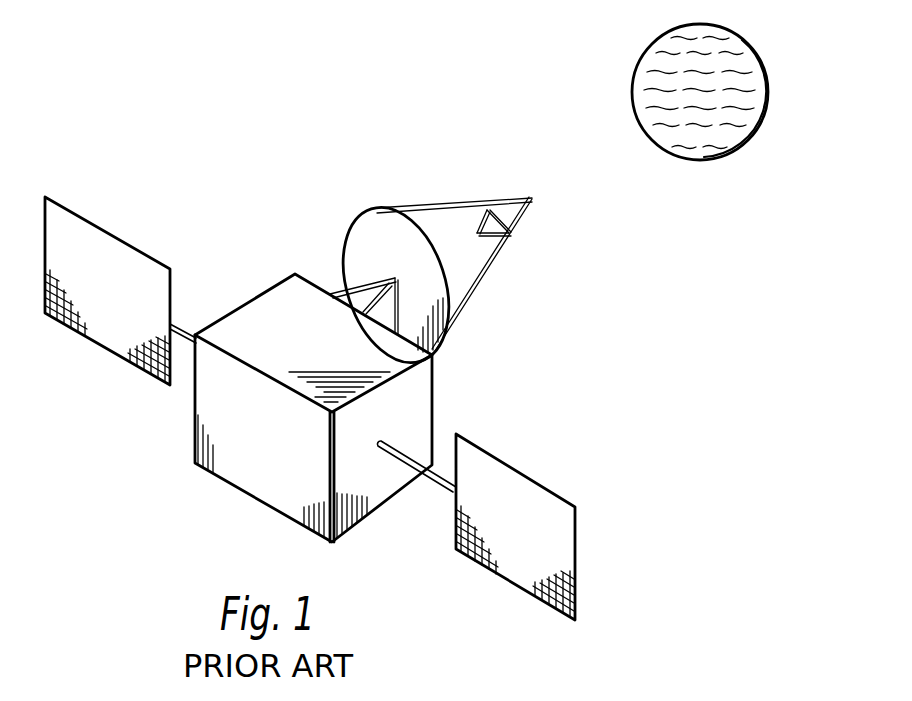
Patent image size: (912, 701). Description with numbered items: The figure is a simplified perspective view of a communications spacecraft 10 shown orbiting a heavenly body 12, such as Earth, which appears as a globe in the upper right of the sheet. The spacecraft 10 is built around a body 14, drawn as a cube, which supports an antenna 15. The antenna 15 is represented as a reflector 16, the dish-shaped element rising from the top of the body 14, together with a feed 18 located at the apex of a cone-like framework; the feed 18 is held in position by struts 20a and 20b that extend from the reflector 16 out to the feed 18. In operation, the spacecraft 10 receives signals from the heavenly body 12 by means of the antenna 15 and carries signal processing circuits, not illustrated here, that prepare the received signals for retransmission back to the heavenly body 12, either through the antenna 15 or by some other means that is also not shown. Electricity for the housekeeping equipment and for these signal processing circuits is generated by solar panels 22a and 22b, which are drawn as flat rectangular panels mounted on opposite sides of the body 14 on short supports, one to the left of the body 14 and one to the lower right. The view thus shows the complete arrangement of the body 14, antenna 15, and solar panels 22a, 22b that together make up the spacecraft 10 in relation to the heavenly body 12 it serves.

The communications spacecraft 10 is at (383, 578).
The heavenly body 12 is at (710, 163).
The body 14 is at (218, 478).
The antenna 15 is at (405, 148).
The reflector 16 is at (347, 227).
The feed 18 is at (530, 200).
The strut 20a is at (458, 202).
The strut 20b is at (478, 282).
The solar panel 22a is at (120, 240).
The solar panel 22b is at (513, 469).